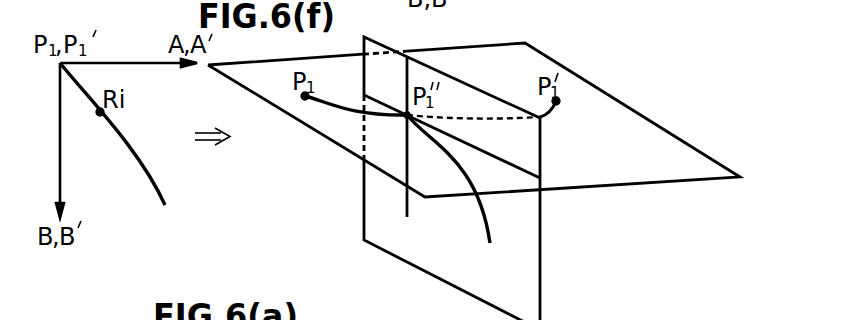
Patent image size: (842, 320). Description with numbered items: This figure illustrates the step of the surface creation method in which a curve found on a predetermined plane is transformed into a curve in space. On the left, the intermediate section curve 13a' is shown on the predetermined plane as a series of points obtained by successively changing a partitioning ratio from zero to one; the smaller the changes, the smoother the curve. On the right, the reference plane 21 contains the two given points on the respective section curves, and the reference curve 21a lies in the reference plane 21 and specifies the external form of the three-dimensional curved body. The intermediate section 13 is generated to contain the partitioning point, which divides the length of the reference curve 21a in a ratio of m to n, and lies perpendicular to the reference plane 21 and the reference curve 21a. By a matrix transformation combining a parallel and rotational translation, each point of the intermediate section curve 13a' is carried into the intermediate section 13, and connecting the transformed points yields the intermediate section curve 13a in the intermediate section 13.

The intermediate section 13 is at (407, 261).
The intermediate section curve 13a is at (502, 195).
The intermediate section curve 13a' is at (86, 134).
The reference plane 21 is at (623, 120).
The reference curve 21a is at (337, 111).